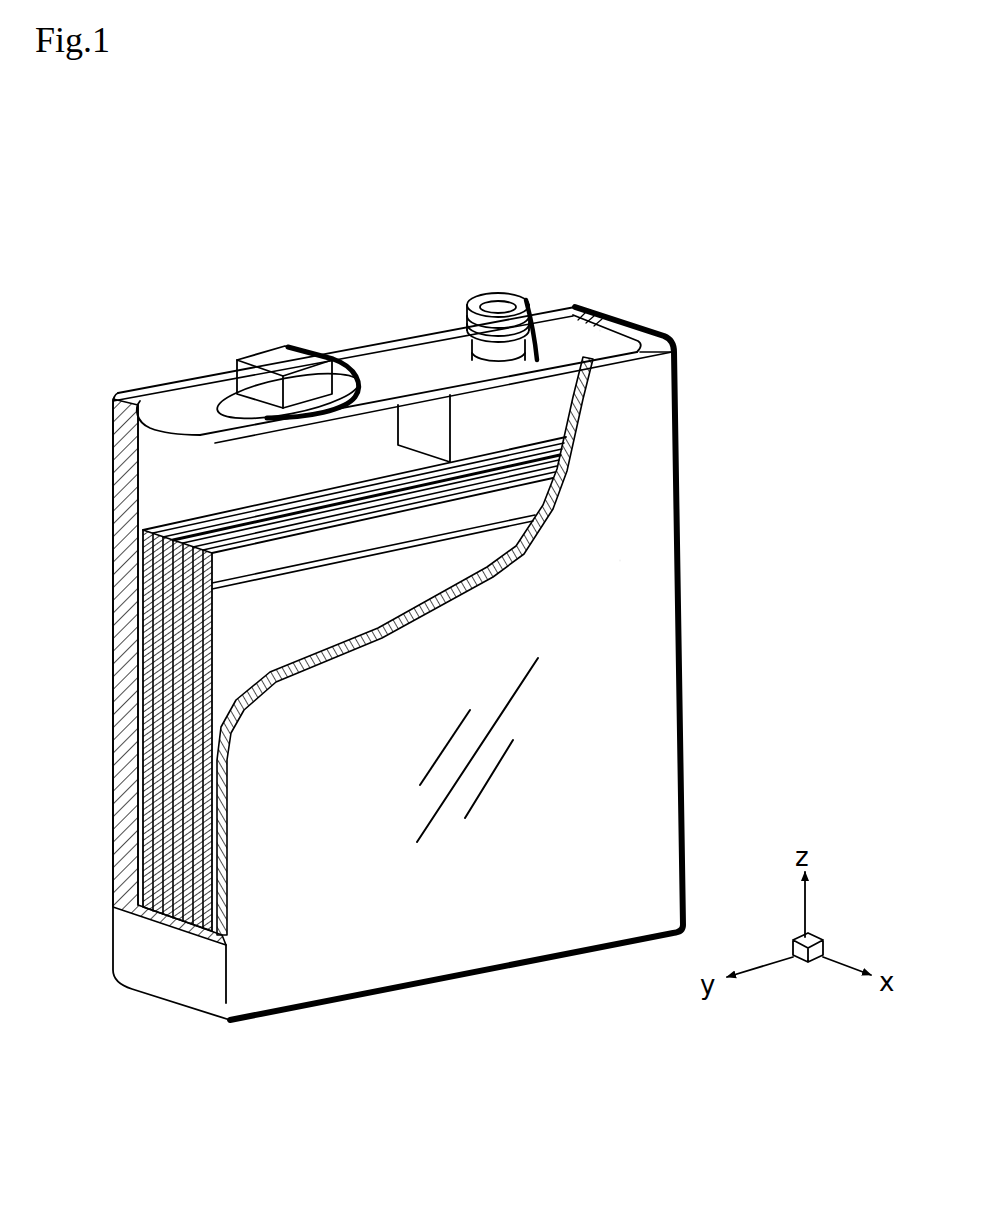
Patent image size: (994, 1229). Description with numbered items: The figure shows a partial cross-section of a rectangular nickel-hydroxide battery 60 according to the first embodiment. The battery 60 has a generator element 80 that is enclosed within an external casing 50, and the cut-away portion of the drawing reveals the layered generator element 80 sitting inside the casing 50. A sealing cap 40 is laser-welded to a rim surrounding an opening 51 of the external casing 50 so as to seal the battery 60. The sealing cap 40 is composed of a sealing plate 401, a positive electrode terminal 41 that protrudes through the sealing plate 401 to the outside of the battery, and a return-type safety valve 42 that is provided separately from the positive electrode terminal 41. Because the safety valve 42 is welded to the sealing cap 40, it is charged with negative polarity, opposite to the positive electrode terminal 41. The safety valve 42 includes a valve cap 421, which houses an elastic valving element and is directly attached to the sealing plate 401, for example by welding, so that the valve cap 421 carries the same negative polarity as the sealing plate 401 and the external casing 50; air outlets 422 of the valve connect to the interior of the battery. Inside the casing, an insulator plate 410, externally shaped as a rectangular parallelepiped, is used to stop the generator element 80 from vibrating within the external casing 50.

The sealing cap 40 is at (590, 308).
The sealing plate 401 is at (603, 335).
The positive electrode terminal 41 is at (517, 287).
The safety valve 42 is at (329, 367).
The valve cap 421 is at (277, 365).
The air outlets 422 is at (316, 399).
The external casing 50 is at (657, 745).
The opening 51 is at (650, 357).
The battery 60 is at (692, 595).
The insulator plate 410 is at (517, 425).
The generator element 80 is at (200, 503).